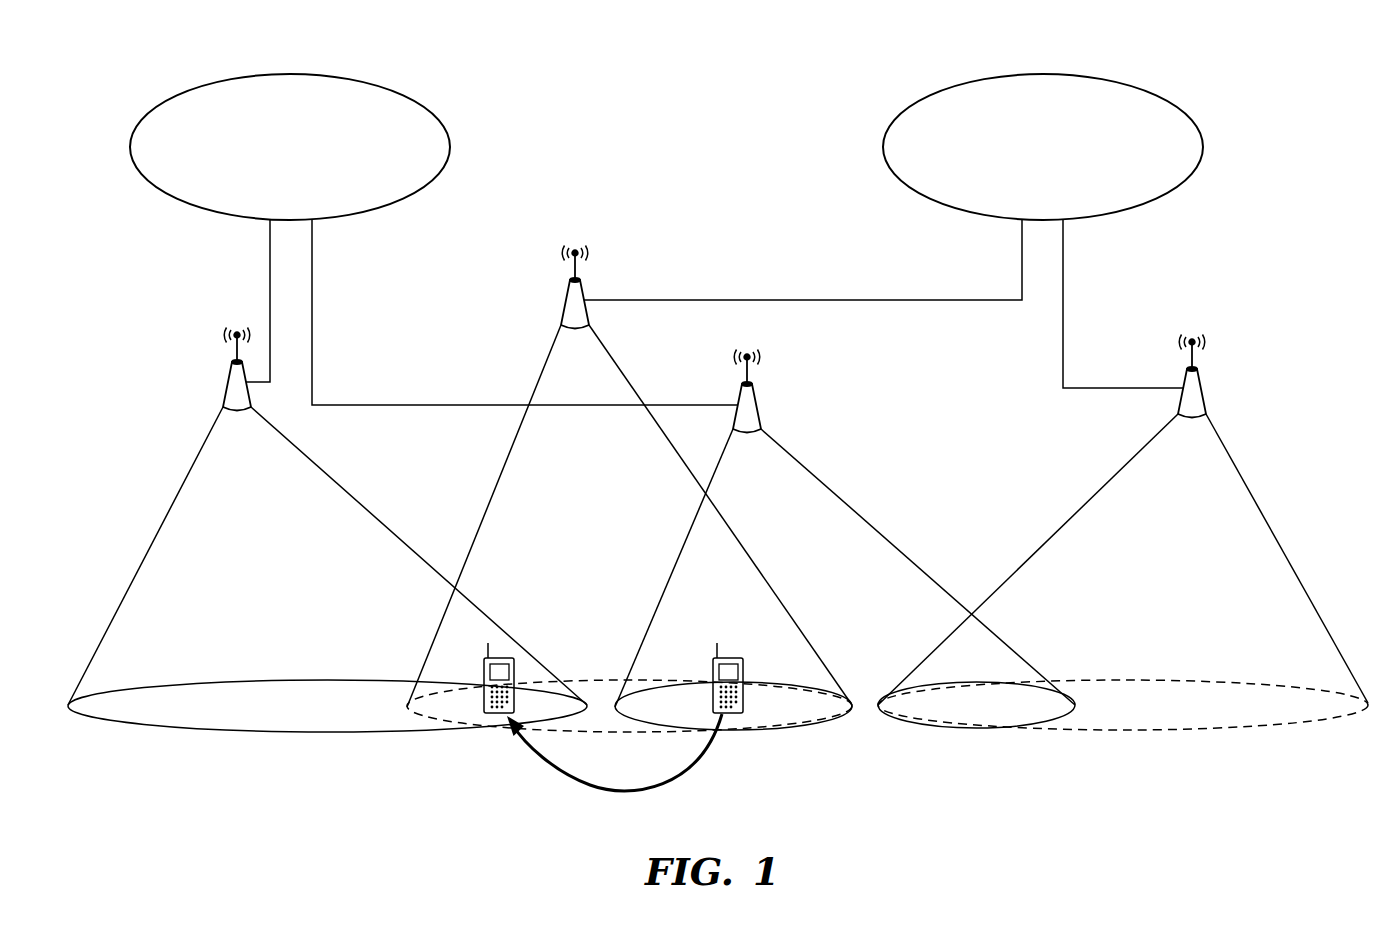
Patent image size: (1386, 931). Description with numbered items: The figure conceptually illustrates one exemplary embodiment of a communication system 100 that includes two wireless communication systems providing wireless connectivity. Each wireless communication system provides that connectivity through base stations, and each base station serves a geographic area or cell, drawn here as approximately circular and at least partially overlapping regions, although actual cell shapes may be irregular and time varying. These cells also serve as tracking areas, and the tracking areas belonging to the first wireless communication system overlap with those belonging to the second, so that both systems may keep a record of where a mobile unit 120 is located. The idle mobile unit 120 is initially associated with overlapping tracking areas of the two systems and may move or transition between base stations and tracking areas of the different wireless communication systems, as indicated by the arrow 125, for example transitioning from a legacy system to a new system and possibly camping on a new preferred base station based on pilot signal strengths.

The communication system 100 is at (1274, 89).
The mobile unit 120 is at (511, 655).
The arrow 125 is at (599, 787).